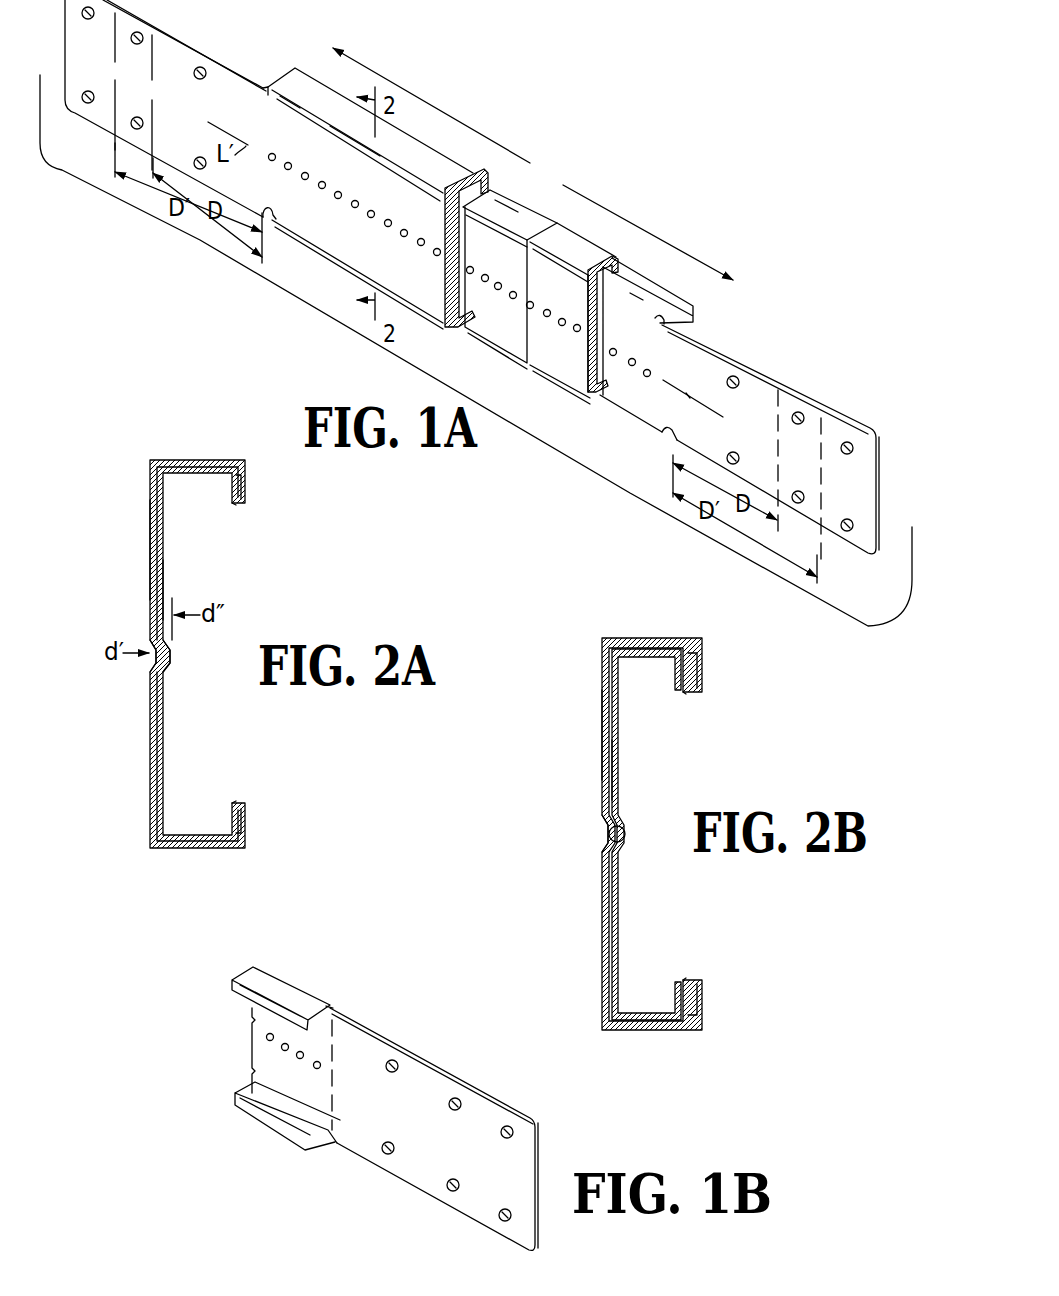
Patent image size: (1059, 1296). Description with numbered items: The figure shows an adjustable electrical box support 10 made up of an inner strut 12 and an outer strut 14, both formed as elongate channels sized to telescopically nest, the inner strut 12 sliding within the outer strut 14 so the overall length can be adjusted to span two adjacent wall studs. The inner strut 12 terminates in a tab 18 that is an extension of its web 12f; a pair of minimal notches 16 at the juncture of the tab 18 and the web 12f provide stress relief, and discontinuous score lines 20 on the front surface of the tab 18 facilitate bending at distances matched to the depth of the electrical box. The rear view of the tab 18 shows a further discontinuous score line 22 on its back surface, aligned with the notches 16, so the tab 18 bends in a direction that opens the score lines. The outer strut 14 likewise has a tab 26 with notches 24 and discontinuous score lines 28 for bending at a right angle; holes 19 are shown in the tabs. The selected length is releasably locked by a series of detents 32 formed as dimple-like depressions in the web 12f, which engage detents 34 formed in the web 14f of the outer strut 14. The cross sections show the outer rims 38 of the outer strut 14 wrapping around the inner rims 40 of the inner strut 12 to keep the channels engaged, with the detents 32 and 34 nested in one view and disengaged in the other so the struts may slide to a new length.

In FIG. 1A, the adjustable electrical box support 10 is at (490, 120).
In FIG. 2A, the adjustable electrical box support 10 is at (116, 738).
In FIG. 2B, the adjustable electrical box support 10 is at (592, 884).
In FIG. 1A, the inner strut 12 is at (643, 292).
In FIG. 2A, the inner strut 12 is at (165, 567).
In FIG. 2B, the inner strut 12 is at (618, 722).
In FIG. 1B, the inner strut 12 is at (285, 985).
In FIG. 1A, the web of inner strut 12f is at (574, 303).
In FIG. 2A, the web of inner strut 12f is at (160, 590).
In FIG. 2B, the web of inner strut 12f is at (610, 770).
In FIG. 1A, the outer strut 14 is at (320, 102).
In FIG. 2A, the outer strut 14 is at (150, 808).
In FIG. 2B, the outer strut 14 is at (602, 988).
In FIG. 1A, the web of outer strut 14f is at (352, 175).
In FIG. 2A, the web of outer strut 14f is at (150, 525).
In FIG. 2B, the web of outer strut 14f is at (602, 703).
In FIG. 1A, the notches 16 is at (664, 326).
In FIG. 1B, the notches 16 is at (335, 1008).
In FIG. 1A, the tab 18 is at (750, 403).
In FIG. 1B, the tab 18 is at (487, 1117).
In FIG. 1A, the fastener hole 19 is at (88, 103).
In FIG. 1B, the fastener hole 19 is at (388, 1155).
In FIG. 1A, the discontinuous score lines 20 is at (825, 432).
In FIG. 1B, the discontinuous score line 22 is at (337, 1092).
In FIG. 1A, the notches 24 is at (265, 88).
In FIG. 1A, the tab 26 is at (220, 107).
In FIG. 1A, the discontinuous score lines 28 is at (115, 42).
In FIG. 1A, the detents 32 is at (577, 331).
In FIG. 2A, the detents 32 is at (171, 656).
In FIG. 2B, the detents 32 is at (624, 832).
In FIG. 1A, the detents 34 is at (353, 208).
In FIG. 2A, the detents 34 is at (150, 674).
In FIG. 2B, the detents 34 is at (601, 838).
In FIG. 1A, the outer rims 38 is at (413, 148).
In FIG. 2A, the outer rims 38 is at (246, 496).
In FIG. 2B, the outer rims 38 is at (702, 673).
In FIG. 2A, the inner rims 40 is at (237, 506).
In FIG. 2B, the inner rims 40 is at (688, 692).